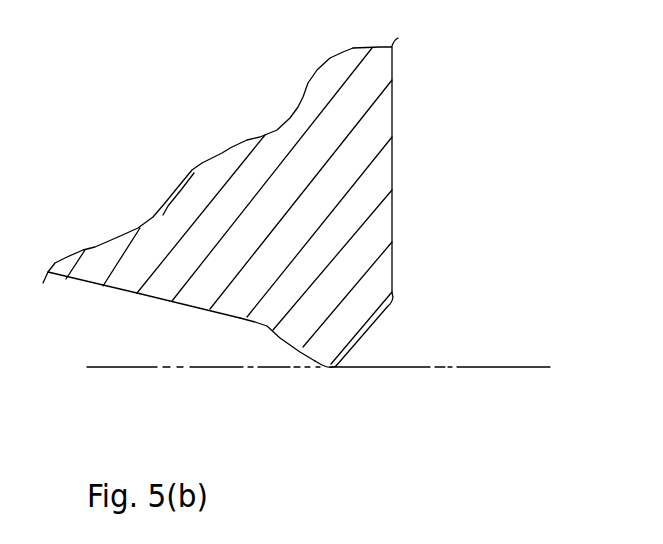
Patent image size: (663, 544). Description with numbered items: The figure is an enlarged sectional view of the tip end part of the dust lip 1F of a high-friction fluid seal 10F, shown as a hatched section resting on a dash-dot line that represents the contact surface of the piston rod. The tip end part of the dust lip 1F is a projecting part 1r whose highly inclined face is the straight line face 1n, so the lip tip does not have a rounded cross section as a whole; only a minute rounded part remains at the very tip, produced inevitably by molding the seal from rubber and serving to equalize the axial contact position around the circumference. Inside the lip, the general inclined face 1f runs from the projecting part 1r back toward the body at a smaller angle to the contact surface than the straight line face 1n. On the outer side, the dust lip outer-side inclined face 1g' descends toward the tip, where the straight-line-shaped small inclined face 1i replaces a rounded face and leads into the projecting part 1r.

The dust lip 1F is at (296, 253).
The high-friction fluid seal 10F is at (267, 253).
The dust lip outer-side inclined face 1g' is at (422, 165).
The small inclined face 1i is at (390, 313).
The general inclined face 1f is at (140, 297).
The straight line face 1n is at (282, 341).
The projecting part 1r is at (332, 367).